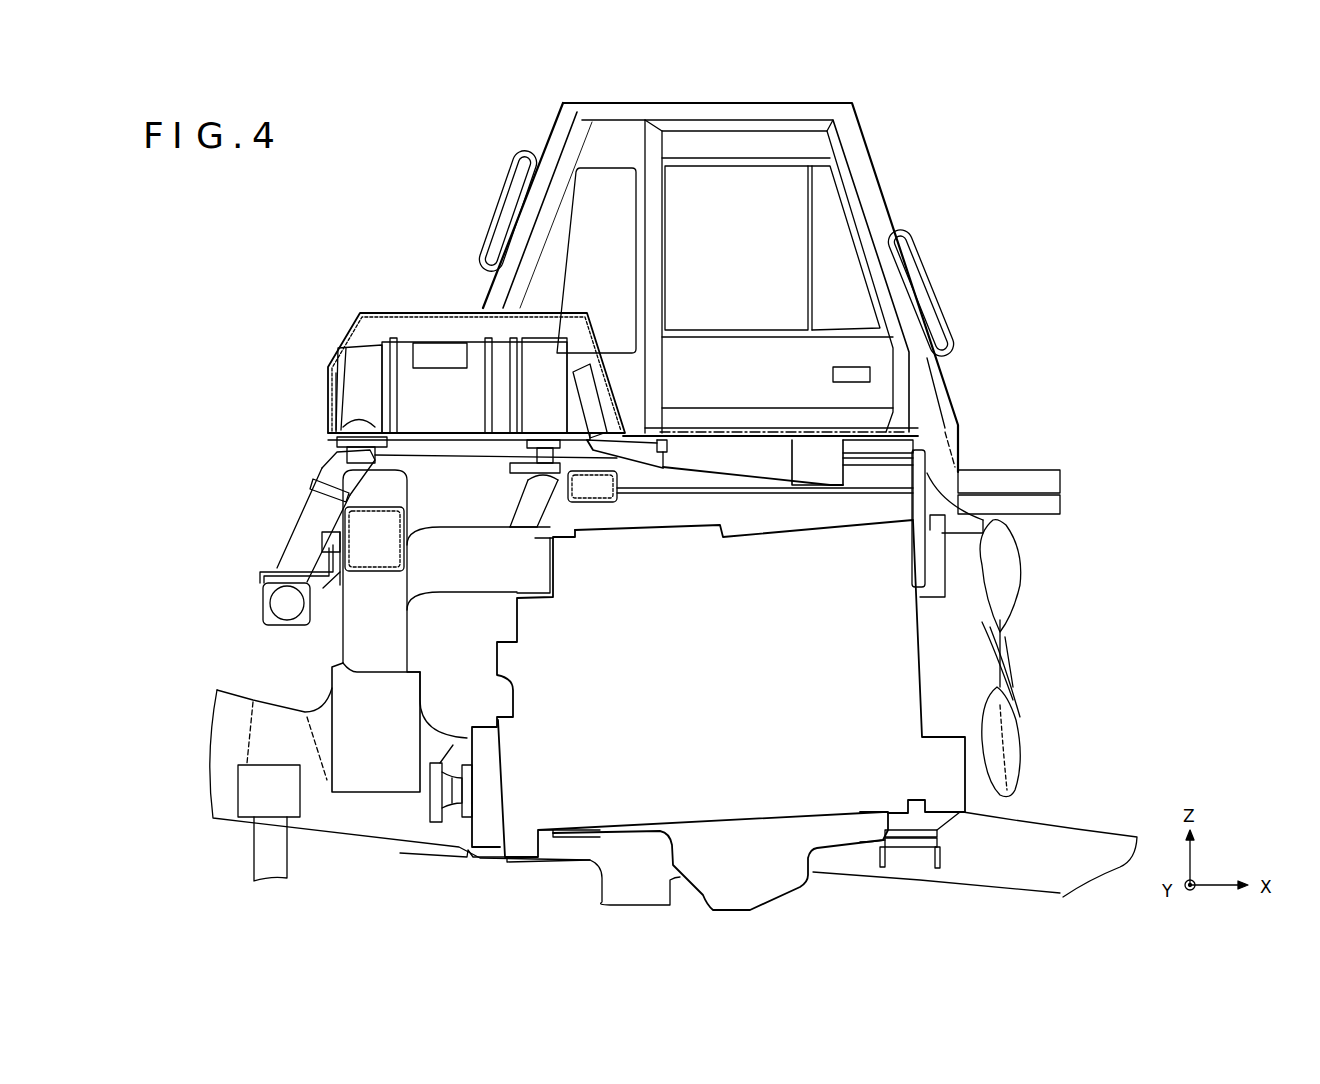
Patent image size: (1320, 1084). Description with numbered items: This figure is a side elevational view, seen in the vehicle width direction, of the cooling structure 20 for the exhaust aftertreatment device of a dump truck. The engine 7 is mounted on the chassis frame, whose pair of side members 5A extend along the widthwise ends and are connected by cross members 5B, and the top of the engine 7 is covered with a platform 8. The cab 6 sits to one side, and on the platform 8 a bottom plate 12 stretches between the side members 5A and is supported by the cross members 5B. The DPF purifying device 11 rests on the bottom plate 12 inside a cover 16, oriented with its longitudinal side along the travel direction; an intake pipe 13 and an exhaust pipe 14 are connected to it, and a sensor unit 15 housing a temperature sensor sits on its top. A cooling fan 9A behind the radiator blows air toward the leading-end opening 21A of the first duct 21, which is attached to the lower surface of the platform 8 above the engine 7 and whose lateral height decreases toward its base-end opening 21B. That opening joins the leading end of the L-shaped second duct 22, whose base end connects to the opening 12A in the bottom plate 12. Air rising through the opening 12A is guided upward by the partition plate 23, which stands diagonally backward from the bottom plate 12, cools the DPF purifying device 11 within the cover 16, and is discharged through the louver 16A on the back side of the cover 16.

The cab 6 is at (822, 181).
The cooling structure 20 is at (713, 405).
The cover 16 is at (556, 310).
The louver 16A is at (333, 342).
The DPF purifying device 11 is at (393, 338).
The sensor unit 15 is at (430, 355).
The partition plate 23 is at (588, 372).
The opening 12A is at (603, 432).
The second duct 22 is at (640, 452).
The base-end opening 21B is at (663, 453).
The first duct 21 is at (775, 463).
The leading-end opening 21A is at (843, 470).
The platform 8 is at (882, 428).
The cooling fan 9A is at (1002, 572).
The bottom plate 12 is at (463, 447).
The exhaust pipe 14 is at (300, 540).
The intake pipe 13 is at (537, 503).
The cross members 5B is at (360, 575).
The engine 7 is at (718, 822).
The side members 5A is at (374, 829).